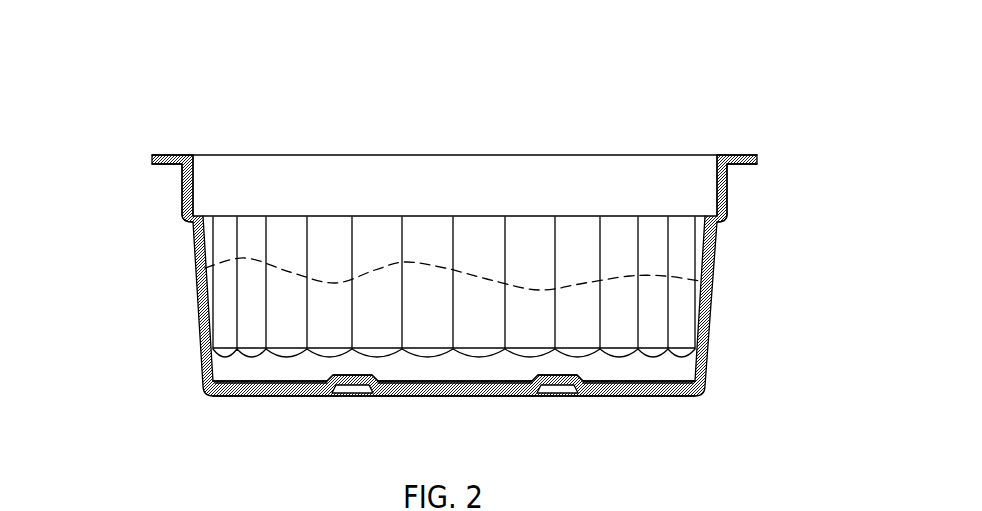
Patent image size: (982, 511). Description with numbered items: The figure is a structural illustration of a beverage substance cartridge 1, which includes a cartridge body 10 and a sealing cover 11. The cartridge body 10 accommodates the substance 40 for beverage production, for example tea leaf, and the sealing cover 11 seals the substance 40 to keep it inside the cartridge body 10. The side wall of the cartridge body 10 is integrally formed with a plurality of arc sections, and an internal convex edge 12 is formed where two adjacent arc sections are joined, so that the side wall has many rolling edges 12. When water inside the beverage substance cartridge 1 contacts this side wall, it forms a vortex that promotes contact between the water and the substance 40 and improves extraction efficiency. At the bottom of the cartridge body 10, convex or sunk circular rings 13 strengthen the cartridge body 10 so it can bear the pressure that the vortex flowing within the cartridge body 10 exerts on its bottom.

The beverage substance cartridge 1 is at (443, 240).
The cartridge body 10 is at (181, 216).
The sealing cover 11 is at (332, 155).
The internal convex edge 12 is at (672, 248).
The circular rings 13 is at (557, 385).
The substance 40 is at (257, 293).